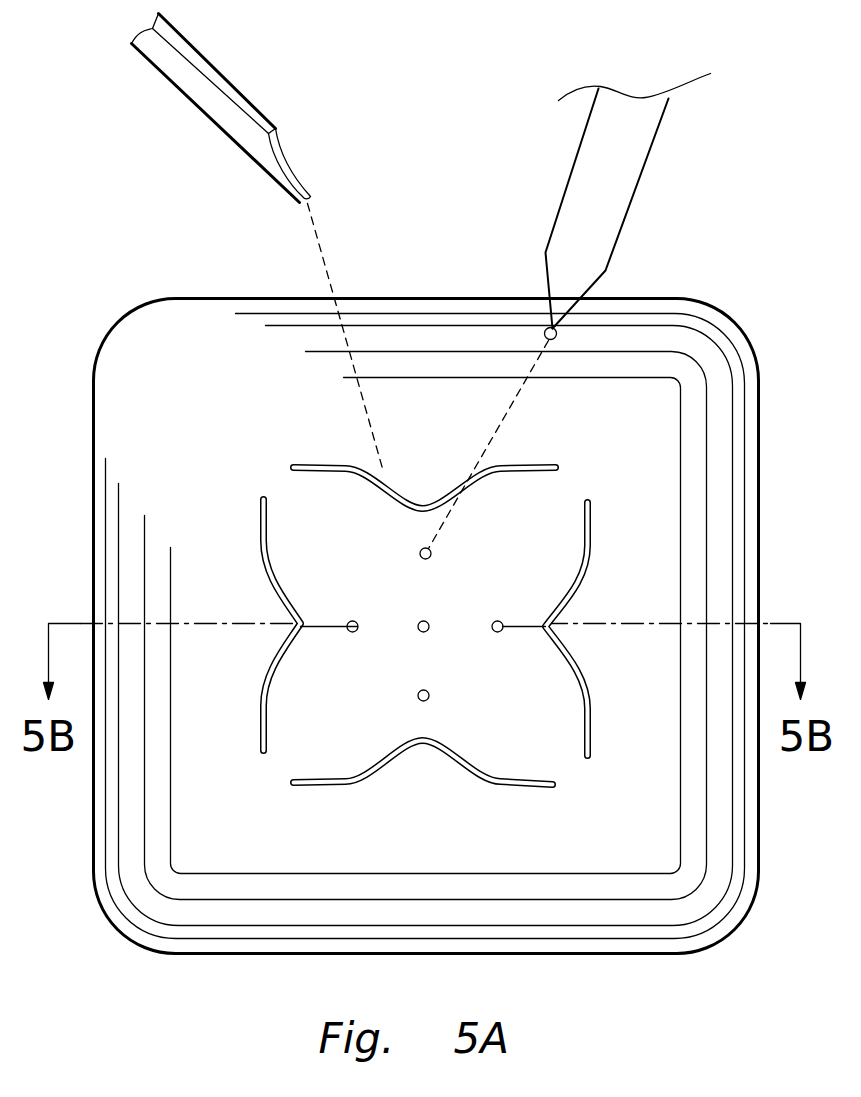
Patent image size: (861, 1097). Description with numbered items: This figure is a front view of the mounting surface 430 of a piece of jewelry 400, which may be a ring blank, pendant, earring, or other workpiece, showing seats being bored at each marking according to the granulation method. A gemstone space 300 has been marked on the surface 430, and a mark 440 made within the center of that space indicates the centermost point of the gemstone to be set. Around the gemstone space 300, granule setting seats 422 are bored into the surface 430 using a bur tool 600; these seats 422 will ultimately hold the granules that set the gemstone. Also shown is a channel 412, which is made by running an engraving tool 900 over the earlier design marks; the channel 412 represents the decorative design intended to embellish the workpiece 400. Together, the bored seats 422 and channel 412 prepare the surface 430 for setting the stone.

The gemstone space 300 is at (376, 679).
The jewelry 400 is at (433, 185).
The channel 412 is at (295, 465).
The granule setting seat 422 is at (430, 549).
The mounting surface 430 is at (587, 848).
The mark 440 is at (429, 630).
The bur tool 600 is at (635, 137).
The engraving tool 900 is at (210, 107).